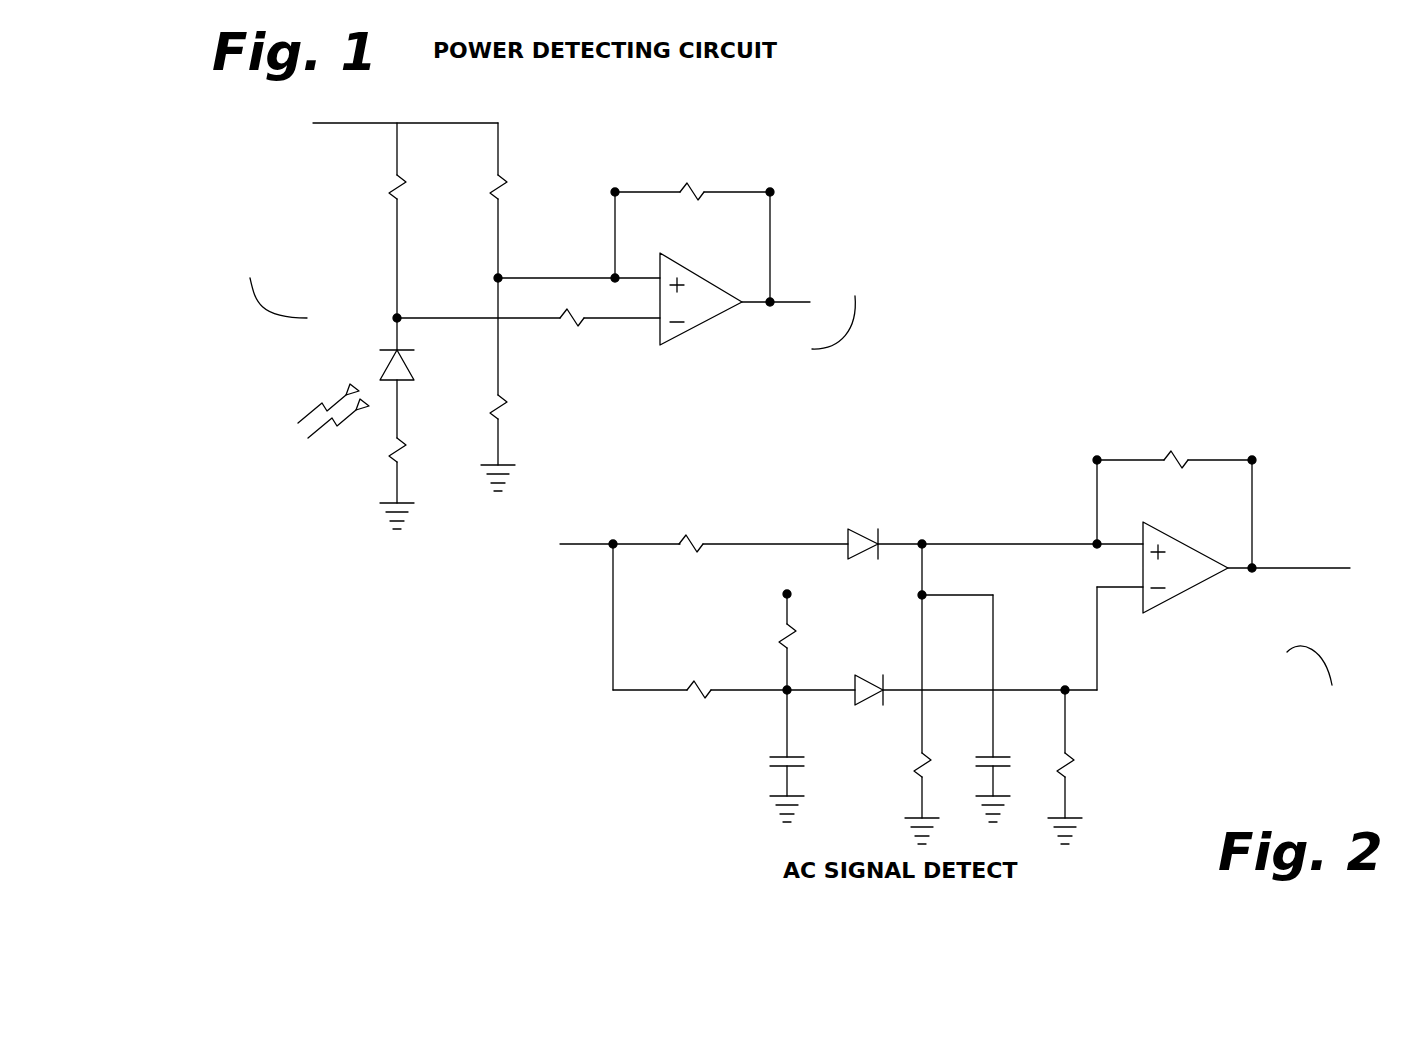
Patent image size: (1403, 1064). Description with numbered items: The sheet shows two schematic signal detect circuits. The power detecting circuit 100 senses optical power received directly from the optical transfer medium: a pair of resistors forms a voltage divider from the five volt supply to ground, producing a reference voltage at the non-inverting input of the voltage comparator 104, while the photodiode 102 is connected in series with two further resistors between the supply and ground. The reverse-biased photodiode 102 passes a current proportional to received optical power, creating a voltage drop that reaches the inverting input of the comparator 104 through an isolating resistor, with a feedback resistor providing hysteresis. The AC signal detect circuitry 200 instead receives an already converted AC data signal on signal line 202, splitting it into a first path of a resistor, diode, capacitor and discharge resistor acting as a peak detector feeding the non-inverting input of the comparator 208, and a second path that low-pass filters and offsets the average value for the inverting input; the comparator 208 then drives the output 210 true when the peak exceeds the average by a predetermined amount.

In FIG. 1, the optical signal detect circuit 100 is at (606, 130).
In FIG. 1, the photodiode 102 is at (385, 358).
In FIG. 1, the voltage comparator 104 is at (688, 333).
In FIG. 2, the signal detect circuitry 200 is at (1027, 473).
In FIG. 2, the signal line 202 is at (562, 544).
In FIG. 2, the comparator 208 is at (1168, 600).
In FIG. 2, the output 210 is at (1287, 568).